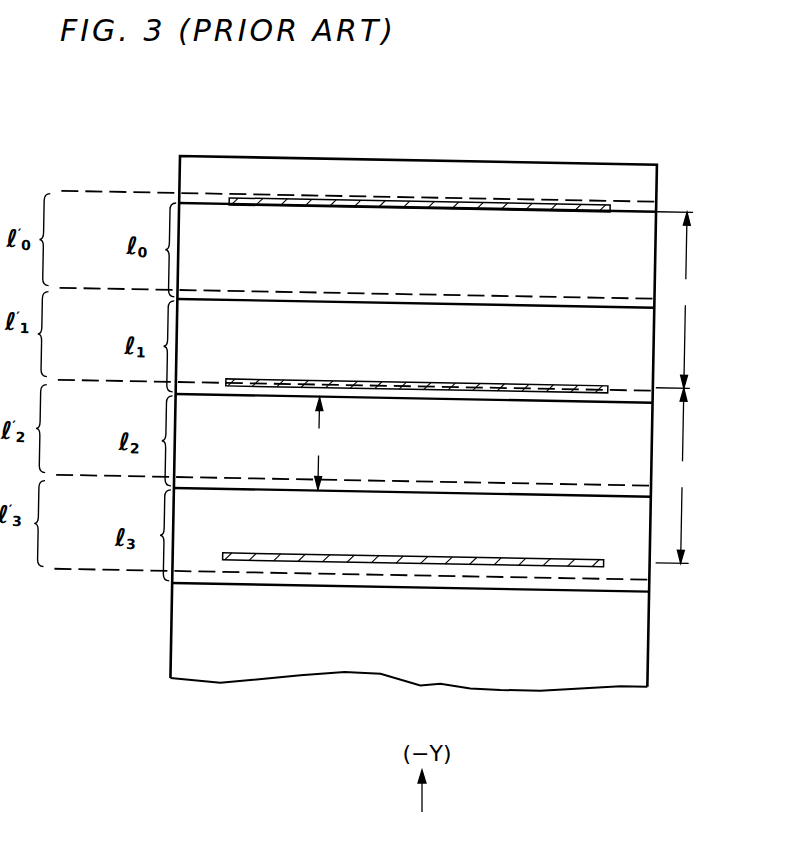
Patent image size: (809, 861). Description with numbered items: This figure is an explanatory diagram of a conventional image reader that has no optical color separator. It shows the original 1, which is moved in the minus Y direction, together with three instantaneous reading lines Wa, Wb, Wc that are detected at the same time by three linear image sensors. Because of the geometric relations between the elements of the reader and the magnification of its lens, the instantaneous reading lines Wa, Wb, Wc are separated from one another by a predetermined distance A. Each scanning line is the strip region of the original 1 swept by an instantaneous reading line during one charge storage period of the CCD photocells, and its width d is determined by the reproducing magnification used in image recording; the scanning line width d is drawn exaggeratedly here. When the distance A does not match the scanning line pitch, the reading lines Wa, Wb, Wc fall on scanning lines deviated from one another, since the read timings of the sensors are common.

The original 1 is at (431, 396).
The instantaneous reading line Wc is at (420, 187).
The instantaneous reading line Wb is at (417, 364).
The instantaneous reading line Wa is at (414, 541).
The predetermined distance A is at (673, 388).
The width of scanning lines d is at (314, 443).